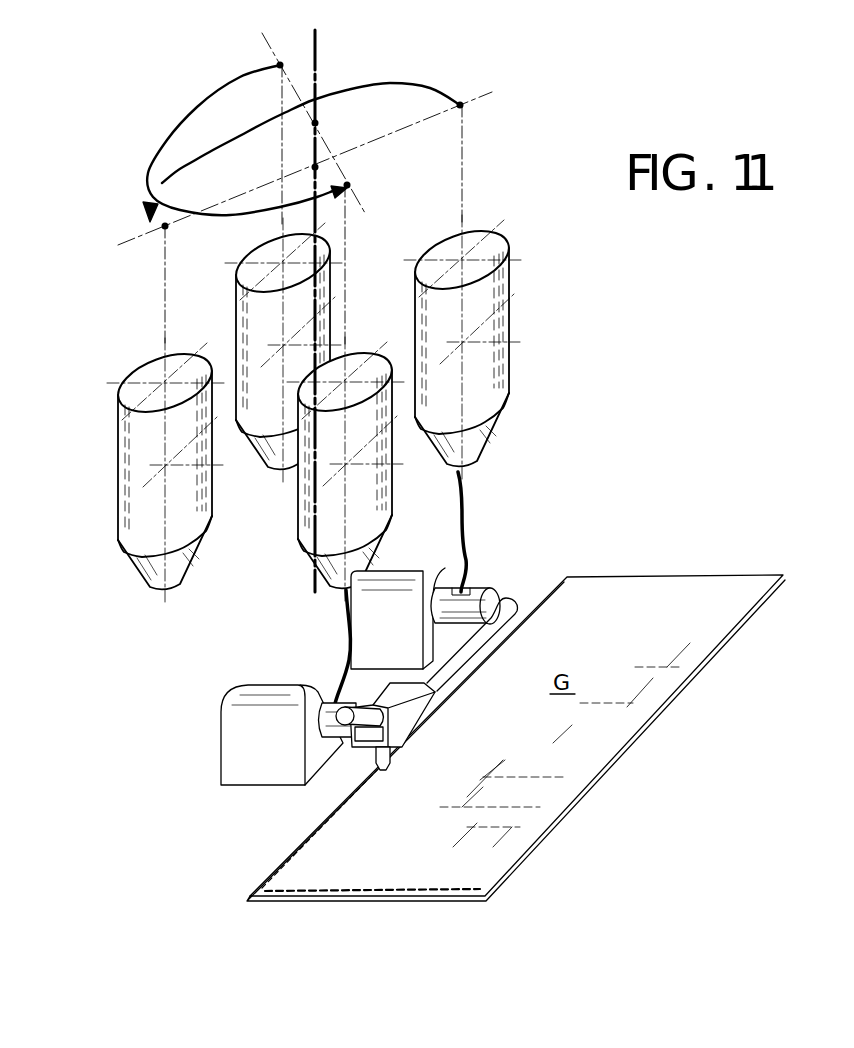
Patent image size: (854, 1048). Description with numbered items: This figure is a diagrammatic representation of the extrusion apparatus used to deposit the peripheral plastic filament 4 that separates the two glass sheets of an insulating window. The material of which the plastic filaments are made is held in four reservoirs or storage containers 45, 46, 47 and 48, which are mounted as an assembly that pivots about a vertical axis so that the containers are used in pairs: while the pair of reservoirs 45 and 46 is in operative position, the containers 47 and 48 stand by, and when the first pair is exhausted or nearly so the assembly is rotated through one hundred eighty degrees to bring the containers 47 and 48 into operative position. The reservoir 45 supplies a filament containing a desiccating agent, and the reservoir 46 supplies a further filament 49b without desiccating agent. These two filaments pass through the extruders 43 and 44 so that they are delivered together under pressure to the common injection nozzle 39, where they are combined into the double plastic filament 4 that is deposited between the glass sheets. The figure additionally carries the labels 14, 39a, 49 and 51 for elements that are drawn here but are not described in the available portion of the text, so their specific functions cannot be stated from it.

The peripheral plastic filament 4 is at (325, 890).
The dispensing apparatus 14 is at (537, 410).
The extrusion nozzle 39 is at (410, 718).
The nozzle tip 39a is at (396, 757).
The extruder 43 is at (407, 578).
The extruder 44 is at (252, 716).
The reservoir 45 is at (497, 360).
The reservoir 46 is at (373, 508).
The container 47 is at (128, 477).
The container 48 is at (260, 310).
The supply line 49 is at (470, 528).
The further filament 49b is at (343, 640).
The support arm 51 is at (467, 655).